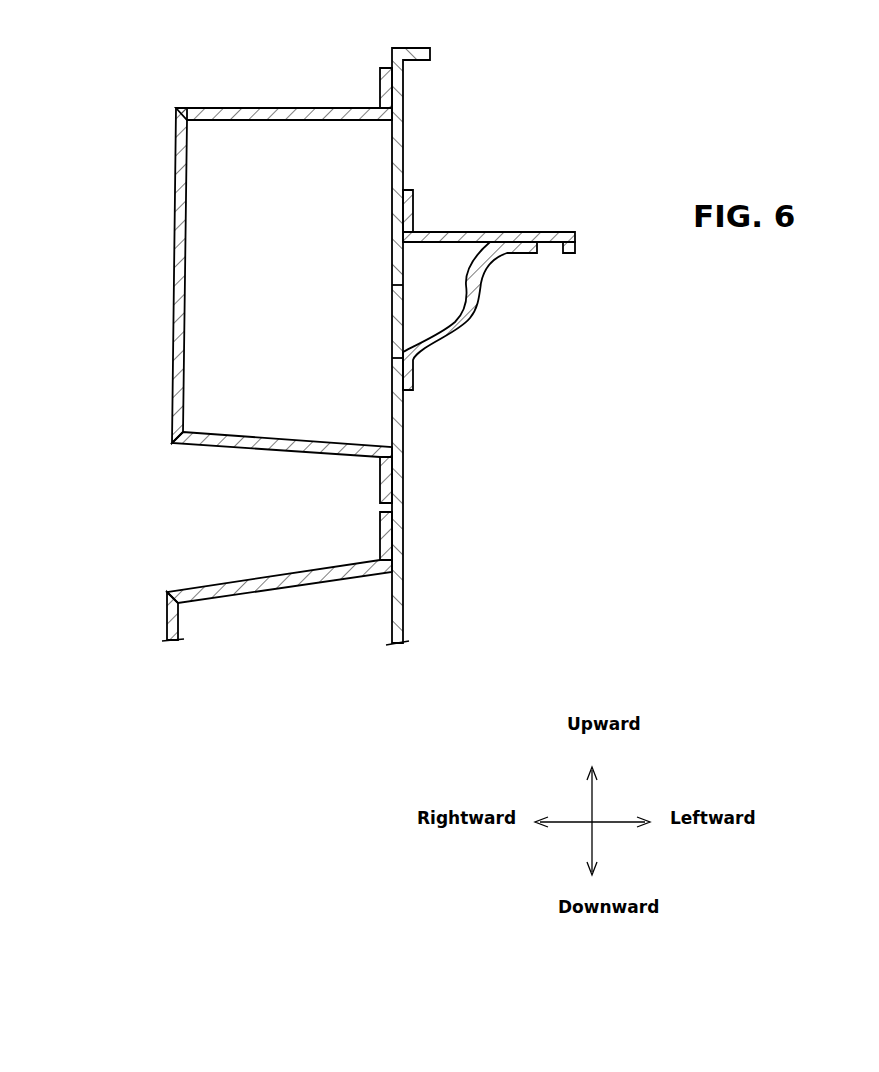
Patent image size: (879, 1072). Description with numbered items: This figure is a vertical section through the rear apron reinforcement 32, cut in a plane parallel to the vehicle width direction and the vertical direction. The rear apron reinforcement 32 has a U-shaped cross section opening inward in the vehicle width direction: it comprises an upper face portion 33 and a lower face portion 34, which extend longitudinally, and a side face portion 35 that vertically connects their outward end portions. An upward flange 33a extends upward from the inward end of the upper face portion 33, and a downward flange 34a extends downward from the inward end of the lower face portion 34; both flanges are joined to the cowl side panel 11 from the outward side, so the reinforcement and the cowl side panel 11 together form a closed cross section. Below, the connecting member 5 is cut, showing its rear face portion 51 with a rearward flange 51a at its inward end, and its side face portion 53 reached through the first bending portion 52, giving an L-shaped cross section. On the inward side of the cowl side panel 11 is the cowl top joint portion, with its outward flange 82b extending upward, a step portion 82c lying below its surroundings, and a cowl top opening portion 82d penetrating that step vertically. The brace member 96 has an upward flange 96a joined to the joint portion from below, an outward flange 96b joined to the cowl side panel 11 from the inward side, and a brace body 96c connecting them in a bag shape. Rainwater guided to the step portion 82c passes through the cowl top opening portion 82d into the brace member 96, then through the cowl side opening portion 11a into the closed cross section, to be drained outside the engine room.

The connecting member 5 is at (237, 600).
The cowl side panel 11 is at (403, 346).
The cowl side opening portion 11a is at (392, 303).
The rear apron reinforcement 32 is at (216, 265).
The upper face portion 33 is at (293, 108).
The upward flange 33a is at (380, 88).
The lower face portion 34 is at (253, 455).
The downward flange 34a is at (380, 478).
The side face portion 35 is at (175, 245).
The rear face portion 51 is at (233, 580).
The rearward flange 51a is at (380, 533).
The first bending portion 52 is at (167, 592).
The side face portion 53 is at (164, 638).
The outward flange 82b is at (413, 205).
The step portion 82c is at (545, 232).
The cowl top opening portion 82d is at (457, 232).
The brace member 96 is at (494, 338).
The upward flange 96a is at (517, 257).
The outward flange 96b is at (450, 387).
The brace body 96c is at (468, 317).